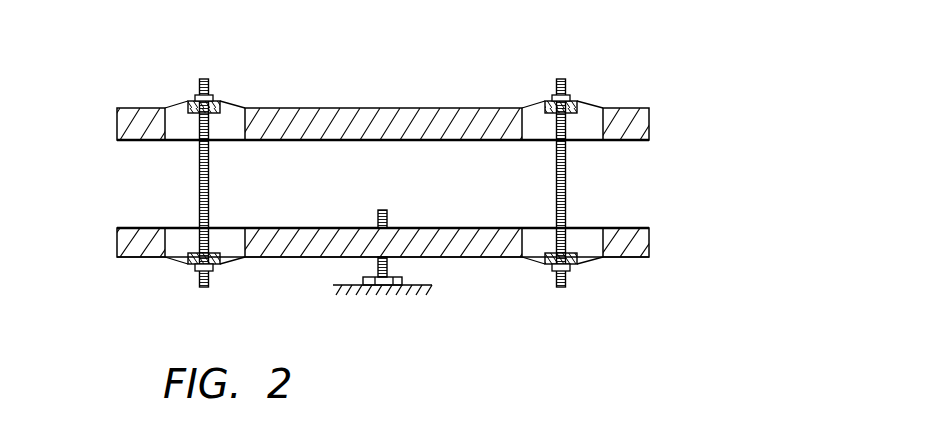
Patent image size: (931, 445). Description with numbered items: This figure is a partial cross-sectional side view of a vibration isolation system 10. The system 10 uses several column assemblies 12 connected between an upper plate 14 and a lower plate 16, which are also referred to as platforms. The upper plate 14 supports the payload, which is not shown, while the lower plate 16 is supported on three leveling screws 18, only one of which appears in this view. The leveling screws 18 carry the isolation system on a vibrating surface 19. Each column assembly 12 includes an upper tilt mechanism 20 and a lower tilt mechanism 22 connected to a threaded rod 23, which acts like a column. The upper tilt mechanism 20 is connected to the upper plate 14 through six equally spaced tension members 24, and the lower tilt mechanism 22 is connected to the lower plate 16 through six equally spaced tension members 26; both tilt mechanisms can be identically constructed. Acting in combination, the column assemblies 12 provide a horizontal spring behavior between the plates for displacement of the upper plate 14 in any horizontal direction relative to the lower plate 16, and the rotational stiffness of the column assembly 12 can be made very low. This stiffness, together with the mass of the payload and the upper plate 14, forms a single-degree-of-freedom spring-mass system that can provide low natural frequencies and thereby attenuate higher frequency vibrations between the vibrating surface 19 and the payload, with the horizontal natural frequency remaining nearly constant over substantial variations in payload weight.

The vibration isolation system 10 is at (712, 138).
The column assembly 12 is at (165, 172).
The upper plate 14 is at (395, 109).
The lower plate 16 is at (465, 258).
The leveling screw 18 is at (375, 286).
The vibrating surface 19 is at (418, 283).
The upper tilt mechanism 20 is at (216, 80).
The lower tilt mechanism 22 is at (171, 271).
The threaded rod 23 is at (209, 180).
The tension member 24 is at (176, 102).
The tension member 26 is at (172, 257).